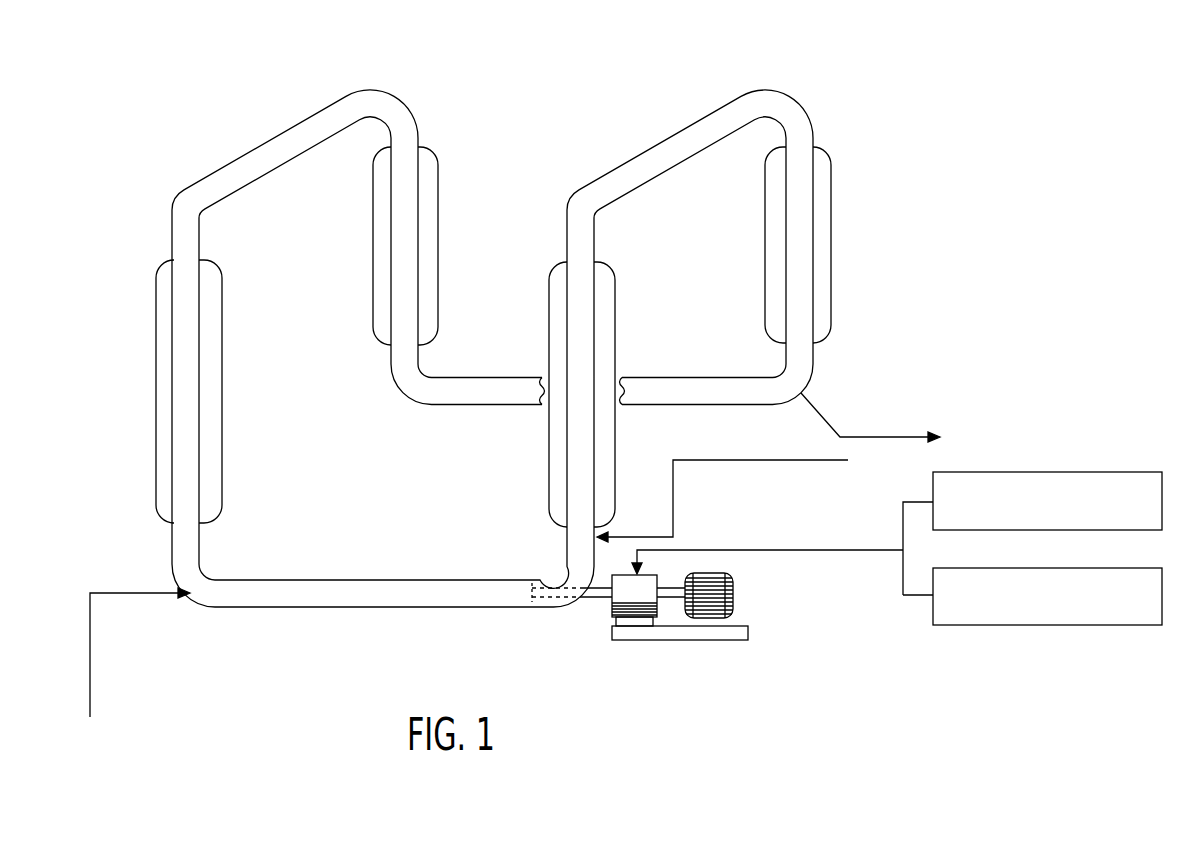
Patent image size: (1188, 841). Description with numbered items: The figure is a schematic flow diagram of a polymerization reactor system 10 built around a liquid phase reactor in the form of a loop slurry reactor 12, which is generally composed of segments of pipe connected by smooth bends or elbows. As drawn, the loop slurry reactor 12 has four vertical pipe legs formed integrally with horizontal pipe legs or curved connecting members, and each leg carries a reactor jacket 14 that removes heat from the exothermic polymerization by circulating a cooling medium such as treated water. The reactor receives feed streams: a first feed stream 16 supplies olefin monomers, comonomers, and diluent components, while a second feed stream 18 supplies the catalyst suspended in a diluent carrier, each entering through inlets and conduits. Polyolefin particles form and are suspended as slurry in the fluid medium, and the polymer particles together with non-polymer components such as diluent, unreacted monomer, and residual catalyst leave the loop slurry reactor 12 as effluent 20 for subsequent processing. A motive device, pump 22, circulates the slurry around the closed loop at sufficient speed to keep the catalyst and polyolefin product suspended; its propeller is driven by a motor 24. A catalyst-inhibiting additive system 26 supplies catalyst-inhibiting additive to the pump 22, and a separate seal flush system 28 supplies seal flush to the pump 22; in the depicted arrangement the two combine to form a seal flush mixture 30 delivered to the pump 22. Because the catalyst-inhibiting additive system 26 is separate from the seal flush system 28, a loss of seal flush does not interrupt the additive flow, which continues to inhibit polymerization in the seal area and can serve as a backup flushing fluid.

The polymerization reactor system 10 is at (608, 40).
The loop slurry reactor 12 is at (697, 123).
The reactor jacket 14 is at (222, 336).
The first feed stream 16 is at (718, 460).
The second feed stream 18 is at (91, 671).
The effluent 20 is at (816, 412).
The pump 22 is at (612, 612).
The motor 24 is at (733, 593).
The catalyst-inhibiting additive system 26 is at (1127, 472).
The seal flush system 28 is at (1127, 568).
The seal flush mixture 30 is at (773, 551).